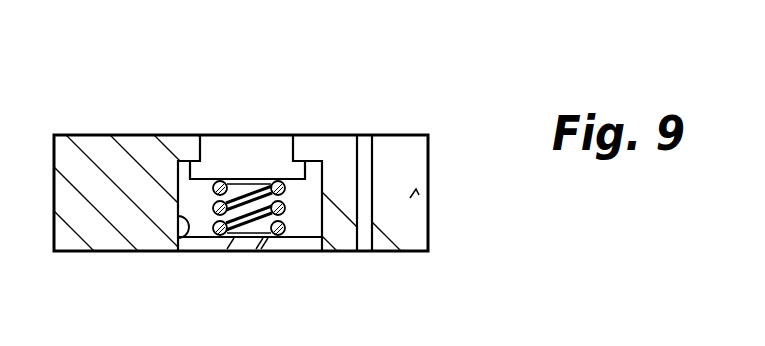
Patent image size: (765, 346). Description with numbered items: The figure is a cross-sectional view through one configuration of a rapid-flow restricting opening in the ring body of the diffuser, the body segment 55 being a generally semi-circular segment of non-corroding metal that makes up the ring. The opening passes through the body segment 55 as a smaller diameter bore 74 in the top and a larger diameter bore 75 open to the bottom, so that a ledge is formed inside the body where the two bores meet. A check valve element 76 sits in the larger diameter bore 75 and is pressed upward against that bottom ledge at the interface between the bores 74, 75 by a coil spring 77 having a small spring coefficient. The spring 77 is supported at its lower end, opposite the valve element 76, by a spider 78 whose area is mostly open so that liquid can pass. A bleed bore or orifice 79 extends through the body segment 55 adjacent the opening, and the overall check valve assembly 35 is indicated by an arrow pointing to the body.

The check valve assembly 35 is at (277, 90).
The valve body 55 is at (428, 186).
The valve stem 74 is at (205, 141).
The retainer plate 75 is at (176, 249).
The valve head 76 is at (268, 167).
The coil spring 77 is at (287, 211).
The orifice 78 is at (257, 268).
The passage 79 is at (365, 133).